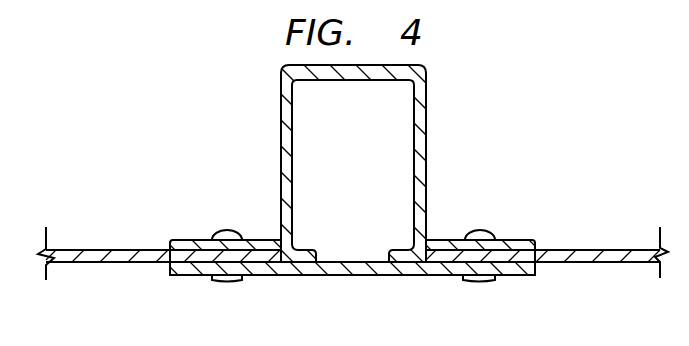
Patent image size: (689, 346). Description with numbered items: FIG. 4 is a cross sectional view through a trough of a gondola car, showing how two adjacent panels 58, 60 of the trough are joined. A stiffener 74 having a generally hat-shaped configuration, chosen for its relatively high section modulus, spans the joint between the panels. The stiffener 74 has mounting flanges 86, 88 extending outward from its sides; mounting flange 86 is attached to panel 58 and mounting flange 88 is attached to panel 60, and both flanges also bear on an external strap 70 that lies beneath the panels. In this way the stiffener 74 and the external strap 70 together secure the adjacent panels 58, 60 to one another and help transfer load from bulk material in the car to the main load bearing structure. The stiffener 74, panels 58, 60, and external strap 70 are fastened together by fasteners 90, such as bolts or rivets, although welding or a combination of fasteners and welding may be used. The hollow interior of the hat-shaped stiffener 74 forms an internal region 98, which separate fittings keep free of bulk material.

The panel 58 is at (611, 250).
The panel 60 is at (108, 262).
The external strap 70 is at (358, 276).
The stiffener 74 is at (427, 97).
The mounting flange 86 is at (522, 240).
The mounting flange 88 is at (183, 240).
The fastener 90 is at (226, 231).
The internal region 98 is at (368, 170).